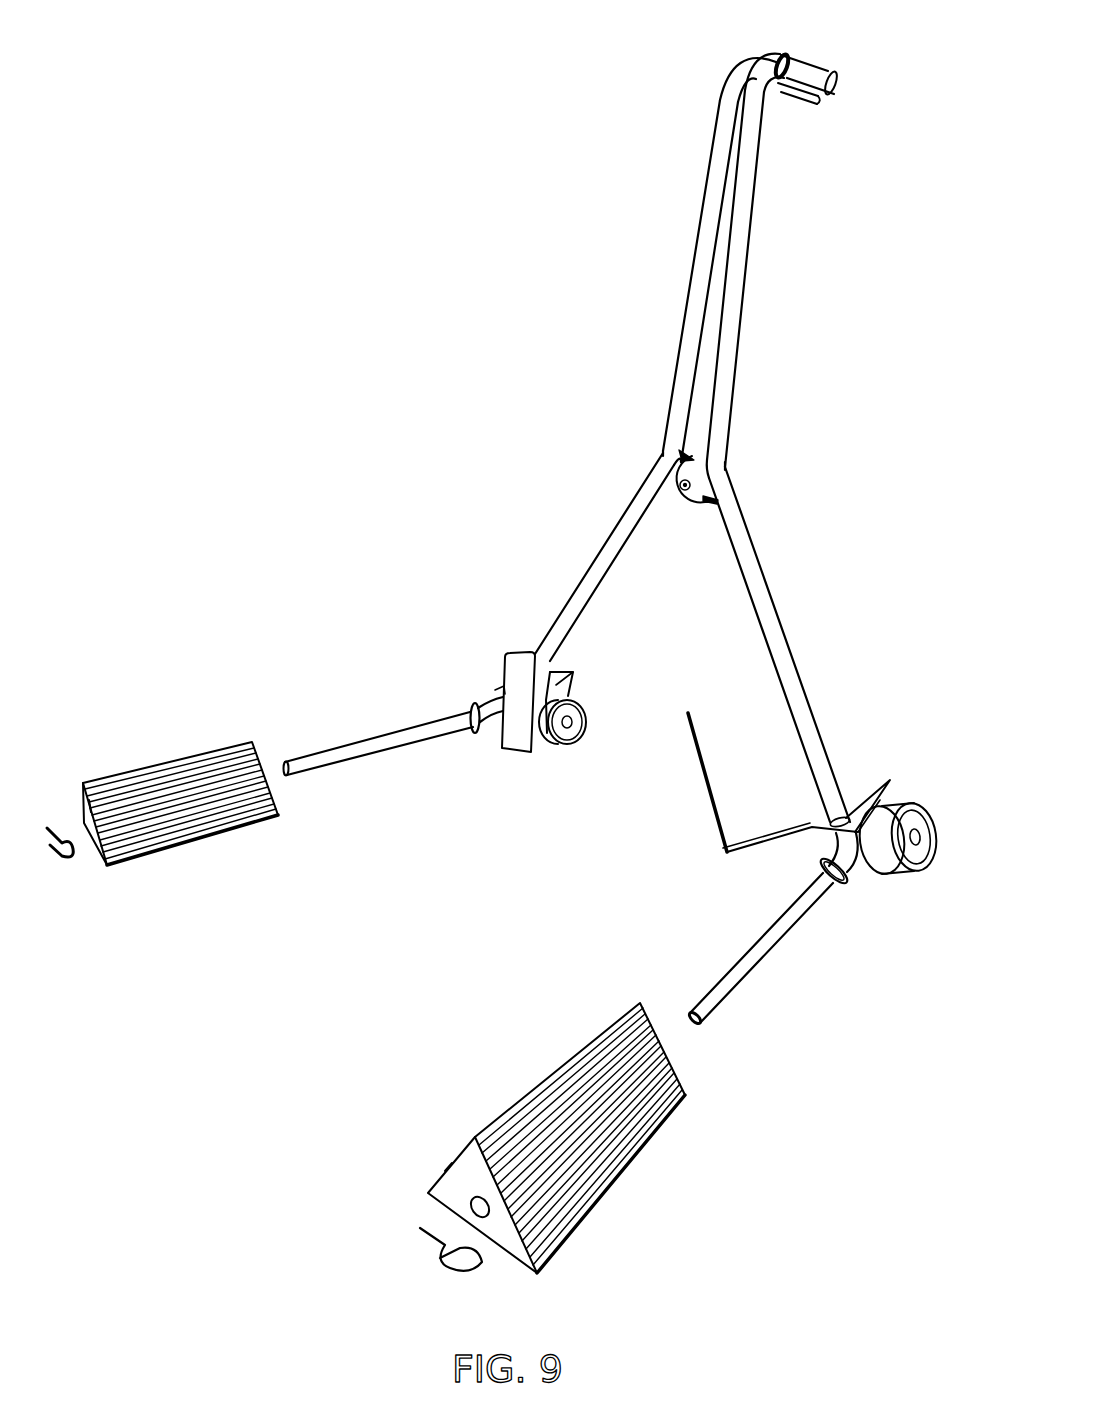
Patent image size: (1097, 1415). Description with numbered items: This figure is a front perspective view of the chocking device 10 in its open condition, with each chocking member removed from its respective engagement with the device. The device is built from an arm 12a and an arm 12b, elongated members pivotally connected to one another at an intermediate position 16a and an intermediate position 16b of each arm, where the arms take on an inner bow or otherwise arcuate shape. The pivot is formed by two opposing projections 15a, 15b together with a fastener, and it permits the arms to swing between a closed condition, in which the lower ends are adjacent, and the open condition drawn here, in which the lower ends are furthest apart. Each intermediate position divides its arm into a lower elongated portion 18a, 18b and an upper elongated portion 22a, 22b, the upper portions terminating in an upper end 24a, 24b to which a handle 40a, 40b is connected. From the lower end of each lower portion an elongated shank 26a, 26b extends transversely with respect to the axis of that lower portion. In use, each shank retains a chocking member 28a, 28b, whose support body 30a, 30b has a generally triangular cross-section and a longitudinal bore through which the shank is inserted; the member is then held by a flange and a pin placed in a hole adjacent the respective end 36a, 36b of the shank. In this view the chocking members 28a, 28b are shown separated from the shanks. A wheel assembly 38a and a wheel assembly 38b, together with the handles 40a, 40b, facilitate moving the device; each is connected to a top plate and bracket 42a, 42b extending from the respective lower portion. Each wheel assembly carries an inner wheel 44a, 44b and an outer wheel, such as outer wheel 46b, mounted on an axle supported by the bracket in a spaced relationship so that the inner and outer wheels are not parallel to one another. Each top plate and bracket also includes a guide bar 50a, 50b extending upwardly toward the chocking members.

The chocking device 10 is at (162, 158).
The arm 12a is at (698, 260).
The arm 12b is at (754, 262).
The projection 15a is at (671, 492).
The projection 15b is at (702, 493).
The intermediate position 16a is at (664, 458).
The intermediate position 16b is at (720, 462).
The lower elongated portion 18a is at (596, 568).
The lower elongated portion 18b is at (781, 638).
The upper elongated portion 22a is at (692, 308).
The upper elongated portion 22b is at (743, 313).
The upper end 24a is at (740, 75).
The upper end 24b is at (770, 57).
The elongated shank 26a is at (362, 752).
The elongated shank 26b is at (765, 958).
The chocking member 28a is at (198, 832).
The chocking member 28b is at (610, 1160).
The support body 30a is at (158, 771).
The support body 30b is at (555, 1086).
The end of shank 36a is at (293, 772).
The end of shank 36b is at (687, 1012).
The wheel assembly 38a is at (594, 739).
The wheel assembly 38b is at (946, 818).
The handle 40a is at (806, 99).
The handle 40b is at (817, 63).
The top plate and bracket 42a is at (536, 673).
The top plate and bracket 42b is at (872, 790).
The inner wheel 44a is at (567, 742).
The inner wheel 44b is at (853, 870).
The outer wheel 46b is at (917, 870).
The guide bar 50a is at (520, 664).
The guide bar 50b is at (697, 702).